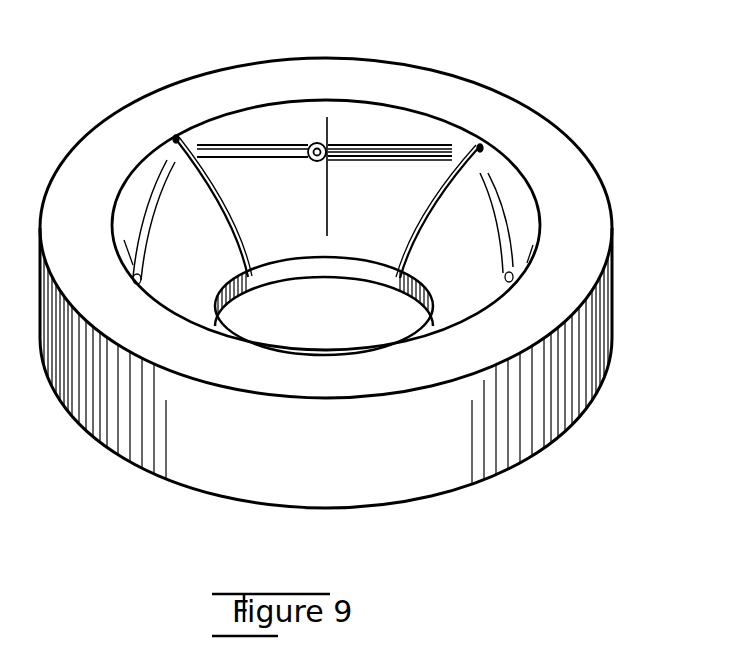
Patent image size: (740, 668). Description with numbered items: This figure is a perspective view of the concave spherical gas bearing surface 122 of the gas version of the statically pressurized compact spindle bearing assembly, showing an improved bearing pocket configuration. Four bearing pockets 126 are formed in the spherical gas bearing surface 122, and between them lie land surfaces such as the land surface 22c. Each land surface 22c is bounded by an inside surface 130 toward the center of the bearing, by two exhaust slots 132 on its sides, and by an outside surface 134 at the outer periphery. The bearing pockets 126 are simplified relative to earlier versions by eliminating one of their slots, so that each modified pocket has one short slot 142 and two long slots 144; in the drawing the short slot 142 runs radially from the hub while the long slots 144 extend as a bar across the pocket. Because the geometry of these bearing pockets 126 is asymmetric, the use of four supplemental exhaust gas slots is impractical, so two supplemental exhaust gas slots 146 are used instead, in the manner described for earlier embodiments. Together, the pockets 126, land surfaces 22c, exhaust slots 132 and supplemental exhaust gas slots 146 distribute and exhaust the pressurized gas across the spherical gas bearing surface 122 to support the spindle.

The spherical gas bearing surface 122 is at (441, 107).
The bearing pockets 126 is at (152, 205).
The inside surface 130 is at (350, 262).
The exhaust slots 132 is at (175, 138).
The outside surface 134 is at (358, 100).
The short slot 142 is at (325, 117).
The long slots 144 is at (352, 146).
The supplemental exhaust gas slots 146 is at (368, 158).
The land surface 22c is at (295, 218).